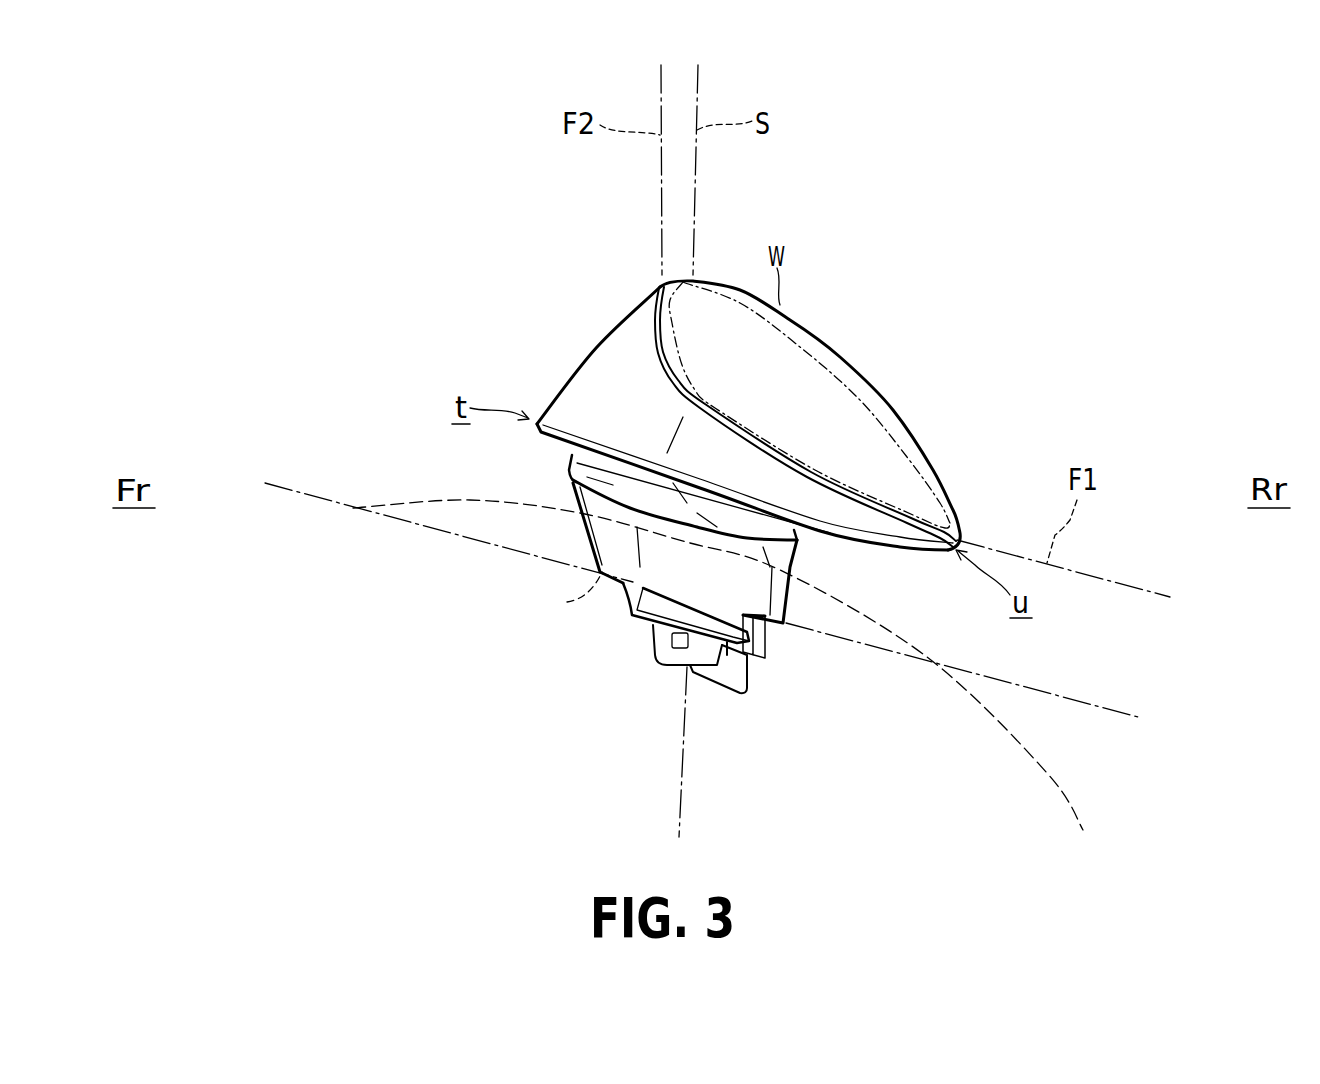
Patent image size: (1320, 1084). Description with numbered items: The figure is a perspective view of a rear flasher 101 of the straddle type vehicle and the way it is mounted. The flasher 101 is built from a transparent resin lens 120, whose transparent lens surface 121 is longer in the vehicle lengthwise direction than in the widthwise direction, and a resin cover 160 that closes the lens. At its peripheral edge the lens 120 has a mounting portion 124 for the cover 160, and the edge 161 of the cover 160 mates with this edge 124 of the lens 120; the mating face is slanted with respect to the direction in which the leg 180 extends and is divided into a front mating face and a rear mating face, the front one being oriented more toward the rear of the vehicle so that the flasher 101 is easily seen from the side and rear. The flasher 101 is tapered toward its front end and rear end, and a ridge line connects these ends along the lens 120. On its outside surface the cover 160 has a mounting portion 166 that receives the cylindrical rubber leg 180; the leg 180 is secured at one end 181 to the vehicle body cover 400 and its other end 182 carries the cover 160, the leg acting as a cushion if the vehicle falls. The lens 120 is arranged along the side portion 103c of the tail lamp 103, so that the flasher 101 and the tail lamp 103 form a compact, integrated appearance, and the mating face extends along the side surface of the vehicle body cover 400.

The flasher 101 is at (403, 405).
The tail lamp 103 is at (1063, 780).
The side portion 103c is at (567, 601).
The lens 120 is at (655, 269).
The lens surface 121 is at (820, 340).
The mounting portion 124 is at (658, 360).
The cover 160 is at (573, 375).
The edge 161 is at (667, 337).
The mounting portion 166 is at (576, 481).
The leg 180 is at (578, 522).
The one end 181 is at (653, 660).
The other end 182 is at (773, 560).
The vehicle body cover 400 is at (355, 503).